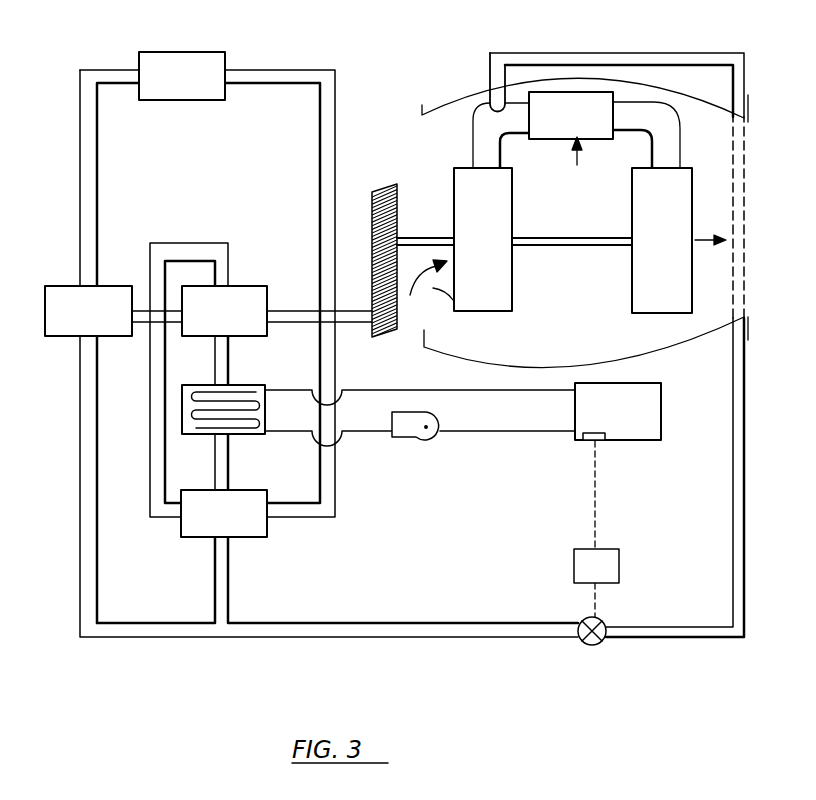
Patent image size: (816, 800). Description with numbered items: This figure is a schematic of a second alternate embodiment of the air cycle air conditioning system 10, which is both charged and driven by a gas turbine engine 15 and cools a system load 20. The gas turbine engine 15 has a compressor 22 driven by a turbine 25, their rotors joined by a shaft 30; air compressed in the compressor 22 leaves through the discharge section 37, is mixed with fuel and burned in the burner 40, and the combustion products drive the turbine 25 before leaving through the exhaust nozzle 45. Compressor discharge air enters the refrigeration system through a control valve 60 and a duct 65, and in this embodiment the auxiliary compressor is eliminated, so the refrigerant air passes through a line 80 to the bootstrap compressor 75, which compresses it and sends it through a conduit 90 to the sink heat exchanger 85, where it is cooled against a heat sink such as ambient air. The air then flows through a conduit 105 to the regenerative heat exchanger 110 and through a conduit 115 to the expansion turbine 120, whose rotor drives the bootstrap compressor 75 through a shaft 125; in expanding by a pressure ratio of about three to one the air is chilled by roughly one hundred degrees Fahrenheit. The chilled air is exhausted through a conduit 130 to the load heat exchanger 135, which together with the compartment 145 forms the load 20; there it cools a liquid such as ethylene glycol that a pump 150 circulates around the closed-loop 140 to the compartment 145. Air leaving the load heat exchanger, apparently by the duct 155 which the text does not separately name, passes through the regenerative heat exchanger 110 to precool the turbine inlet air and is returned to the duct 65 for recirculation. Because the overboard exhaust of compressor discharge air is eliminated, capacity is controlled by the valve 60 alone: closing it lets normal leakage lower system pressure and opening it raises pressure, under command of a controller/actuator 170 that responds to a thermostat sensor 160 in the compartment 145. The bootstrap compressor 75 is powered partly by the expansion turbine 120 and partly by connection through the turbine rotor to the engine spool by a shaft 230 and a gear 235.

The air cycle air conditioning system 10 is at (358, 82).
The gas turbine engine 15 is at (688, 358).
The system load 20 is at (600, 376).
The compressor 22 is at (462, 176).
The turbine 25 is at (713, 193).
The shaft 30 is at (230, 352).
The discharge section 37 is at (486, 128).
The burner 40 is at (604, 95).
The exhaust nozzle 45 is at (710, 314).
The control valve 60 is at (606, 652).
The duct 65 is at (220, 583).
The bootstrap compressor 75 is at (88, 311).
The line 80 is at (88, 483).
The sink heat exchanger 85 is at (220, 60).
The conduit 90 is at (86, 188).
The conduit 105 is at (334, 182).
The regenerative heat exchanger 110 is at (256, 538).
The conduit 115 is at (145, 443).
The expansion turbine 120 is at (256, 290).
The shaft 125 is at (143, 310).
The conduit 130 is at (217, 369).
The load heat exchanger 135 is at (185, 434).
The closed-loop 140 is at (348, 390).
The compartment 145 is at (584, 392).
The pump 150 is at (433, 444).
The conduit 155 is at (230, 472).
The sensor 160 is at (588, 441).
The controller/actuator 170 is at (596, 529).
The shaft 230 is at (356, 312).
The gear 235 is at (374, 338).